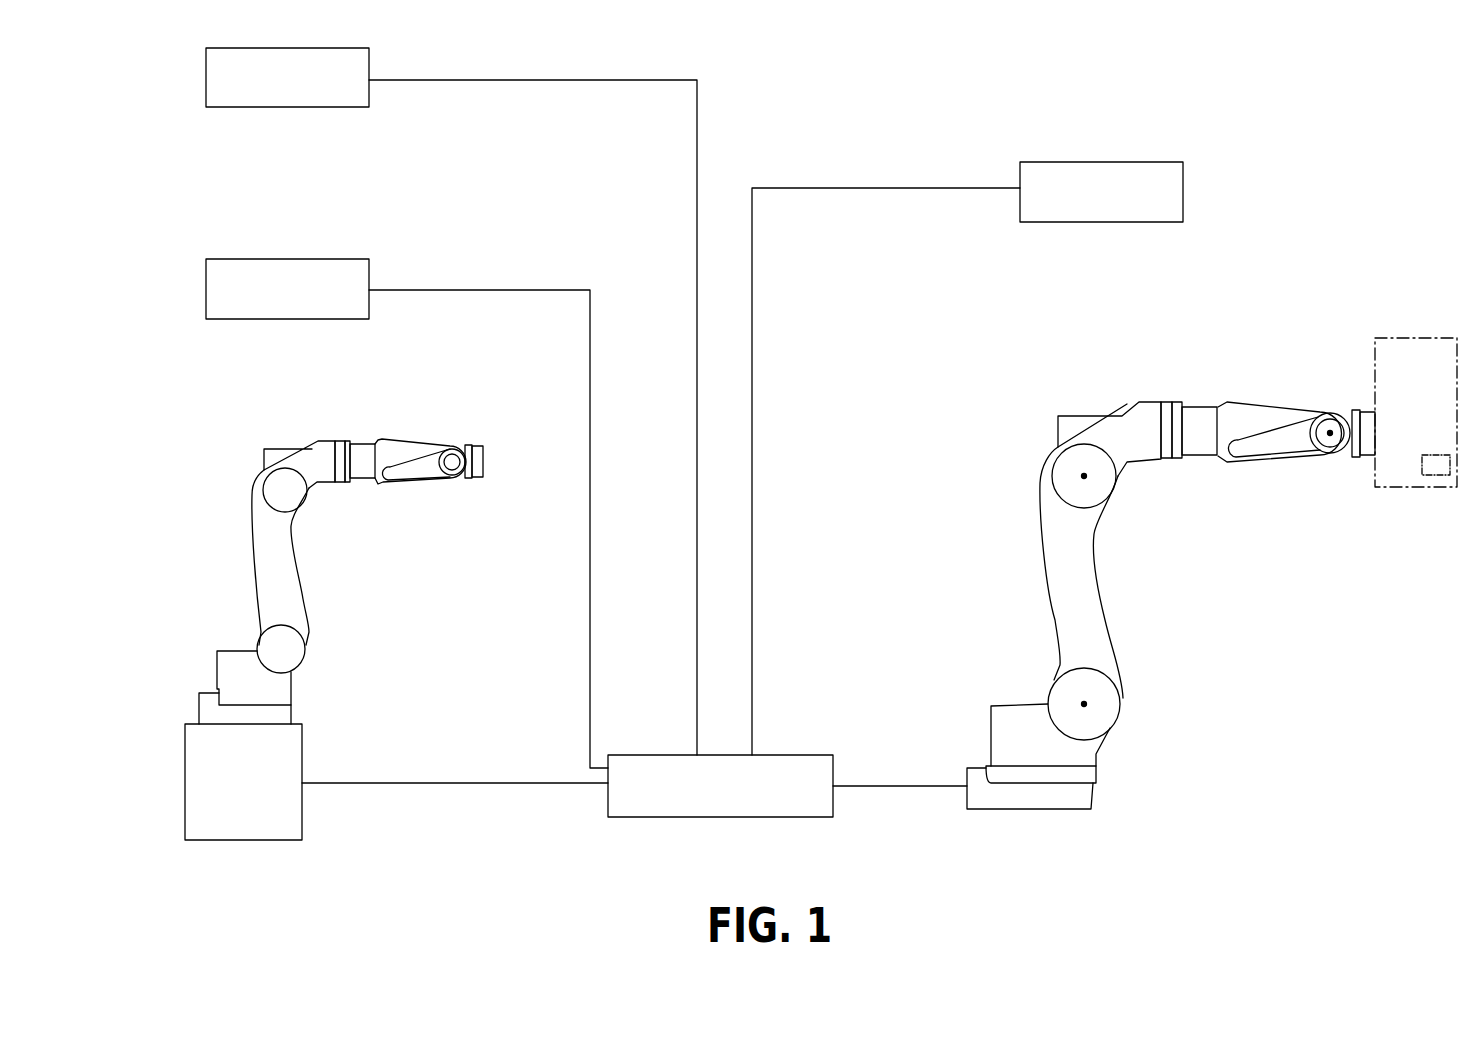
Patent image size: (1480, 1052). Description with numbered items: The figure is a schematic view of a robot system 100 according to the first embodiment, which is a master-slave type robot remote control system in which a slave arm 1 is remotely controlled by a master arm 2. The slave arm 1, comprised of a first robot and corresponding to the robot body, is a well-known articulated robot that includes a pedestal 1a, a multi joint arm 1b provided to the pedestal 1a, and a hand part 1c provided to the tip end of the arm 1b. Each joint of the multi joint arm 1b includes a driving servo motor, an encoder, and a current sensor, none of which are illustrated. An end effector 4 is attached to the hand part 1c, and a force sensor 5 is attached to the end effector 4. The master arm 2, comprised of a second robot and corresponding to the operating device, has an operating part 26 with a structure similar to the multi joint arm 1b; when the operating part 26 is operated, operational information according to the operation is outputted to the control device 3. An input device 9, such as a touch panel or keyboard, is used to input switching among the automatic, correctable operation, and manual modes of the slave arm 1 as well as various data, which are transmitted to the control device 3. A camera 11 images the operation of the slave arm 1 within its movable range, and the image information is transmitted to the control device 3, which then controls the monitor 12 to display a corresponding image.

The robot system 100 is at (898, 120).
The slave arm 1 is at (1171, 551).
The pedestal 1a is at (1090, 747).
The multi joint arm 1b is at (1250, 400).
The hand part 1c is at (1363, 412).
The master arm 2 is at (302, 595).
The operating part 26 is at (413, 435).
The control device 3 is at (800, 755).
The end effector 4 is at (1416, 417).
The force sensor 5 is at (1440, 477).
The input device 9 is at (206, 287).
The camera 11 is at (1183, 190).
The monitor 12 is at (206, 73).